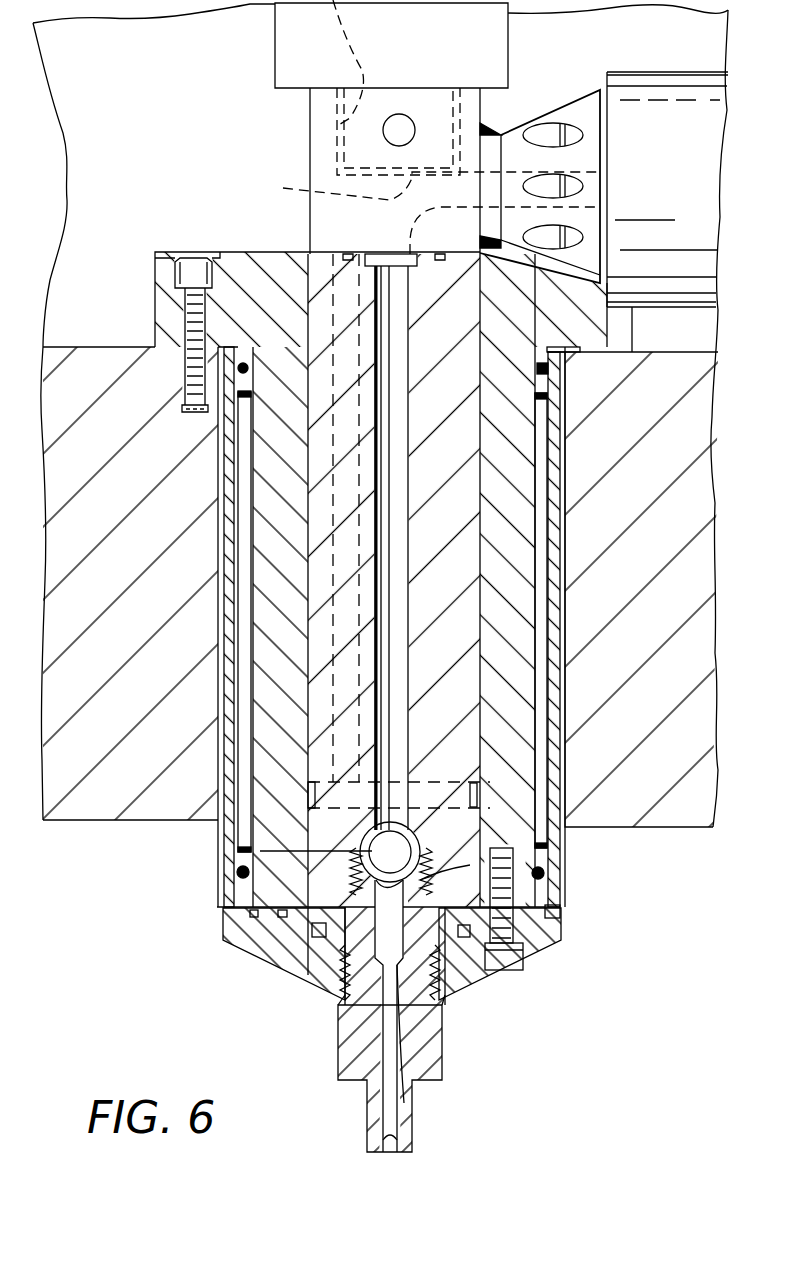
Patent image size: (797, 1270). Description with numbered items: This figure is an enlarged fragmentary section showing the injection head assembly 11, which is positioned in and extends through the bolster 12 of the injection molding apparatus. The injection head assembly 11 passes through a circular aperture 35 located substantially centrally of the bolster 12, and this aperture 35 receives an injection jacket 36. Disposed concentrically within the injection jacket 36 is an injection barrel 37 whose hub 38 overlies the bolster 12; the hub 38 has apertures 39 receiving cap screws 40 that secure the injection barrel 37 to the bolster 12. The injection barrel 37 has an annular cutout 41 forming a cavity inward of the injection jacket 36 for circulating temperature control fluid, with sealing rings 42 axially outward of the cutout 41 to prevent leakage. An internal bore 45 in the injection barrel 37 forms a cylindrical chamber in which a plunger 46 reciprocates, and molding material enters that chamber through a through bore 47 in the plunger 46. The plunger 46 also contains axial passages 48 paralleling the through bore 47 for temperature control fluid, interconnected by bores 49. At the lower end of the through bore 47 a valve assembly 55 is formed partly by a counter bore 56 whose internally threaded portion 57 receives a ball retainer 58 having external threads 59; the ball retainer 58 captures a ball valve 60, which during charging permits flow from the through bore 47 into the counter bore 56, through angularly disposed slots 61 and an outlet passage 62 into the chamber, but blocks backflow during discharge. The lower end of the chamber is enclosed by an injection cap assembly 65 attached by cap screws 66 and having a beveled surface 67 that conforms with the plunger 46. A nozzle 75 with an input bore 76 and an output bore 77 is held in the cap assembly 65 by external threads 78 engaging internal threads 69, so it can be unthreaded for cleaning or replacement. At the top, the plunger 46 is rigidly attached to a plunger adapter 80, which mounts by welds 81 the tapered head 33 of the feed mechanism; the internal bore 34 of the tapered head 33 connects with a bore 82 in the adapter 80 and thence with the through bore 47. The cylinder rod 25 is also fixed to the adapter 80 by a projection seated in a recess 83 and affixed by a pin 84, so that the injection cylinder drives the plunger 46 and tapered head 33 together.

The injection head assembly 11 is at (570, 938).
The bolster 12 is at (90, 828).
The cylinder rod 25 is at (395, 70).
The tapered head 33 is at (578, 112).
The internal bore 34 is at (565, 163).
The circular aperture 35 is at (560, 783).
The injection jacket 36 is at (548, 870).
The injection barrel 37 is at (548, 895).
The hub 38 is at (160, 307).
The apertures 39 is at (175, 257).
The cap screws 40 is at (192, 262).
The annular cutout 41 is at (250, 820).
The sealing rings 42 is at (542, 362).
The internal bore 45 is at (475, 580).
The plunger 46 is at (438, 608).
The through bore 47 is at (400, 280).
The axial passages 48 is at (330, 300).
The bores 49 is at (433, 782).
The valve assembly 55 is at (432, 990).
The counter bore 56 is at (410, 845).
The internally threaded portion 57 is at (500, 858).
The ball retainer 58 is at (340, 990).
The external threads 59 is at (558, 912).
The ball valve 60 is at (260, 851).
The angularly disposed slots 61 is at (420, 870).
The outlet passage 62 is at (386, 902).
The injection cap assembly 65 is at (293, 982).
The cap screws 66 is at (510, 955).
The beveled surface 67 is at (530, 855).
The internal threads 69 is at (345, 990).
The nozzle 75 is at (435, 1075).
The input bore 76 is at (405, 1100).
The output bore 77 is at (382, 1152).
The external threads 78 is at (434, 1002).
The plunger adapter 80 is at (322, 153).
The welds 81 is at (487, 128).
The bore 82 is at (425, 213).
The recess 83 is at (336, 135).
The pin 84 is at (405, 125).